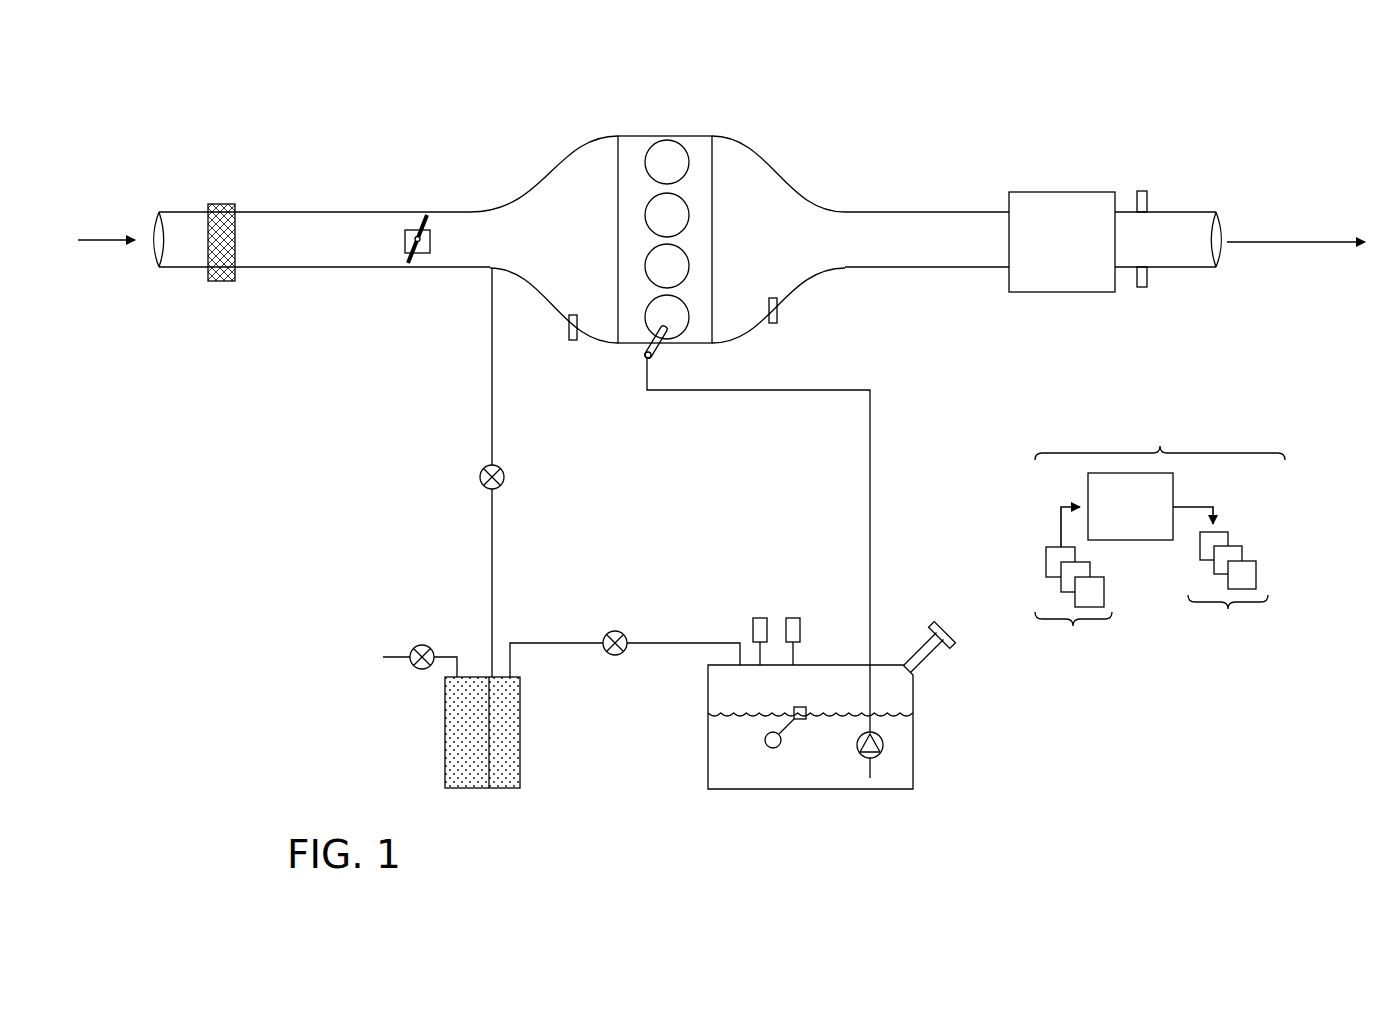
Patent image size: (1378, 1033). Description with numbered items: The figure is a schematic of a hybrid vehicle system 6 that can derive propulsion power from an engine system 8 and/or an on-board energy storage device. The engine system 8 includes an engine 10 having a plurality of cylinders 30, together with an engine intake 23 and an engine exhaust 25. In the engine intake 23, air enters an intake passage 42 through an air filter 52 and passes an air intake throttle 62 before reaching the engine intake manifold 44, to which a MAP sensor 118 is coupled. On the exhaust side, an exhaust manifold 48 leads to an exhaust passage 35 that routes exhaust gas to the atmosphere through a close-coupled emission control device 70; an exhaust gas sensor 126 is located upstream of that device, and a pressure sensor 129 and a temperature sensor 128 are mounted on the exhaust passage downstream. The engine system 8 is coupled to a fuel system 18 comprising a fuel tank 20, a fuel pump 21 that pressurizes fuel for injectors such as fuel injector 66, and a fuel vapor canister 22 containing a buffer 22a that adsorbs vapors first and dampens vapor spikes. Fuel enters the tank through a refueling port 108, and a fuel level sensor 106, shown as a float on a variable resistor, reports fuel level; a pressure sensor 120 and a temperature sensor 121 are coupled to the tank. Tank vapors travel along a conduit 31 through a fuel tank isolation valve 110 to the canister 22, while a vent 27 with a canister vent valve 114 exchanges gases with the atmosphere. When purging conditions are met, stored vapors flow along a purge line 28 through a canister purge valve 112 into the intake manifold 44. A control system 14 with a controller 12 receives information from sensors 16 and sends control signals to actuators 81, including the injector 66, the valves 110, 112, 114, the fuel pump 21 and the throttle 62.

The hybrid vehicle system 6 is at (170, 112).
The engine system 8 is at (1252, 108).
The engine 10 is at (680, 239).
The controller 12 is at (1130, 506).
The control system 14 is at (1160, 534).
The sensors 16 is at (1073, 587).
The fuel system 18 is at (958, 814).
The fuel tank 20 is at (708, 789).
The fuel pump 21 is at (882, 750).
The fuel vapor canister 22 is at (487, 745).
The buffer 22a is at (507, 788).
The engine intake 23 is at (540, 158).
The engine exhaust 25 is at (828, 168).
The vent 27 is at (392, 657).
The purge line 28 is at (492, 436).
The cylinders 30 is at (687, 159).
The conduit 31 is at (665, 643).
The exhaust passage 35 is at (1193, 212).
The intake passage 42 is at (188, 270).
The engine intake manifold 44 is at (561, 252).
The exhaust manifold 48 is at (771, 252).
The air filter 52 is at (222, 204).
The air intake throttle 62 is at (430, 248).
The fuel injector 66 is at (660, 350).
The emission control device 70 is at (1045, 192).
The actuators 81 is at (1222, 579).
The fuel level sensor 106 is at (800, 707).
The refueling port 108 is at (948, 630).
The fuel tank isolation valve 110 is at (608, 632).
The canister purge valve 112 is at (502, 468).
The canister vent valve 114 is at (429, 647).
The MAP sensor 118 is at (568, 320).
The pressure sensor 120 is at (800, 627).
The temperature sensor 121 is at (762, 618).
The exhaust gas sensor 126 is at (778, 302).
The temperature sensor 128 is at (1142, 287).
The pressure sensor 129 is at (1142, 191).